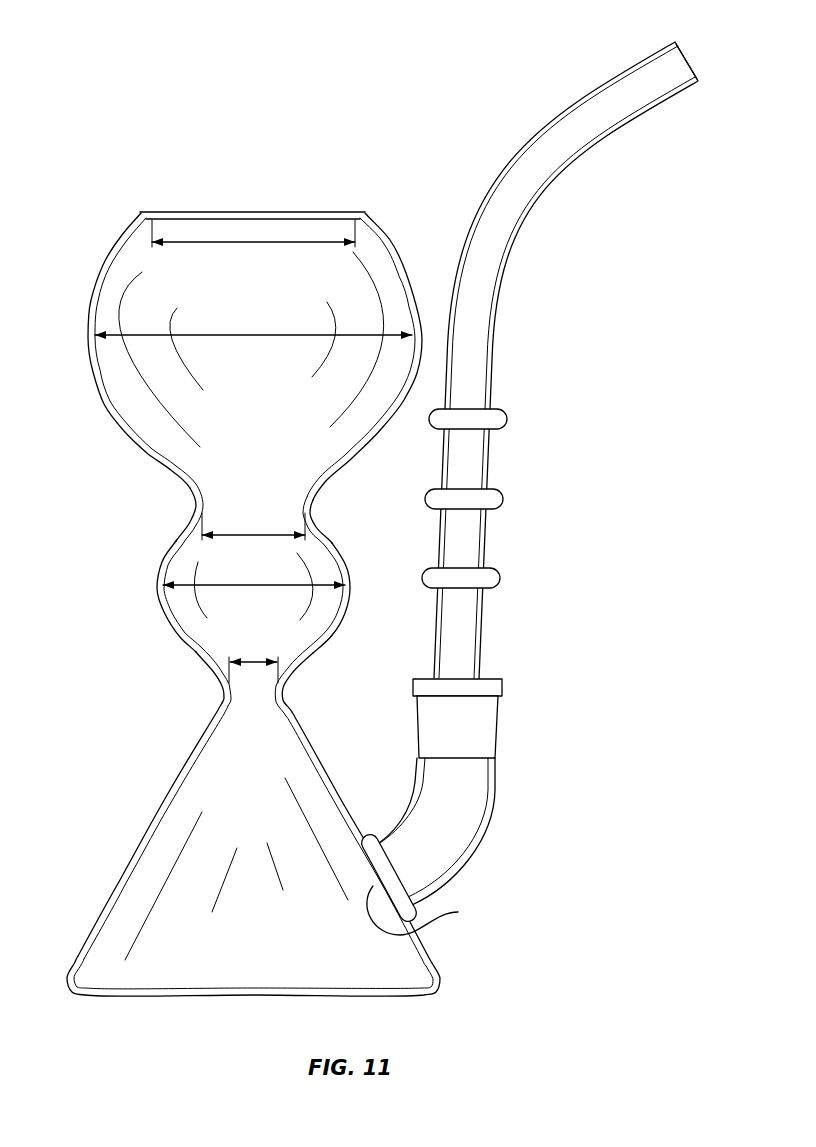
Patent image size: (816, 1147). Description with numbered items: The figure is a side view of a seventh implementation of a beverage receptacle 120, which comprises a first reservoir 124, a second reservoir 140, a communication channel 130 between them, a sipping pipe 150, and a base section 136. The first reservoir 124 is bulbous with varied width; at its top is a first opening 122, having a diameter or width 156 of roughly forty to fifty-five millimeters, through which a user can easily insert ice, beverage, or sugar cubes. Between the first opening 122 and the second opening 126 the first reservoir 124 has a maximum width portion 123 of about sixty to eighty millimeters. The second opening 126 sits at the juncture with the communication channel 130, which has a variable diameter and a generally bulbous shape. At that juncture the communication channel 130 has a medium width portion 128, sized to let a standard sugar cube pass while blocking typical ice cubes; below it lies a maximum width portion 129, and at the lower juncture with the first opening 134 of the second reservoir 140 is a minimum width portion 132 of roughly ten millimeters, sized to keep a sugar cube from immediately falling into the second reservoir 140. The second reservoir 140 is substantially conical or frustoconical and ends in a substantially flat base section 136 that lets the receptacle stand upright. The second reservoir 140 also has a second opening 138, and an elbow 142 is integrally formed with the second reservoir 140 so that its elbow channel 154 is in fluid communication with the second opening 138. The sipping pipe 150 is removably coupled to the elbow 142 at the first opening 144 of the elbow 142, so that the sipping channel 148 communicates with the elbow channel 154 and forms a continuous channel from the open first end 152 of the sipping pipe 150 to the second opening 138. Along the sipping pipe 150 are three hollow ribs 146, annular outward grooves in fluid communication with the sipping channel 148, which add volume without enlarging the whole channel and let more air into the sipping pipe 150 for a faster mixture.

The beverage receptacle 120 is at (236, 134).
The first opening 122 is at (262, 212).
The maximum width portion 123 is at (150, 336).
The first reservoir 124 is at (230, 325).
The second opening 126 is at (248, 500).
The medium width portion 128 is at (257, 537).
The maximum width portion 129 is at (210, 585).
The communication channel 130 is at (292, 570).
The minimum width portion 132 is at (248, 657).
The first opening 134 is at (248, 688).
The base section 136 is at (257, 998).
The second opening 138 is at (433, 889).
The second reservoir 140 is at (245, 898).
The elbow 142 is at (487, 823).
The first opening 144 is at (457, 697).
The hollow rib 146 is at (502, 582).
The sipping channel 148 is at (528, 175).
The sipping pipe 150 is at (510, 273).
The open first end 152 is at (690, 63).
The elbow channel 154 is at (438, 817).
The width 156 is at (255, 243).